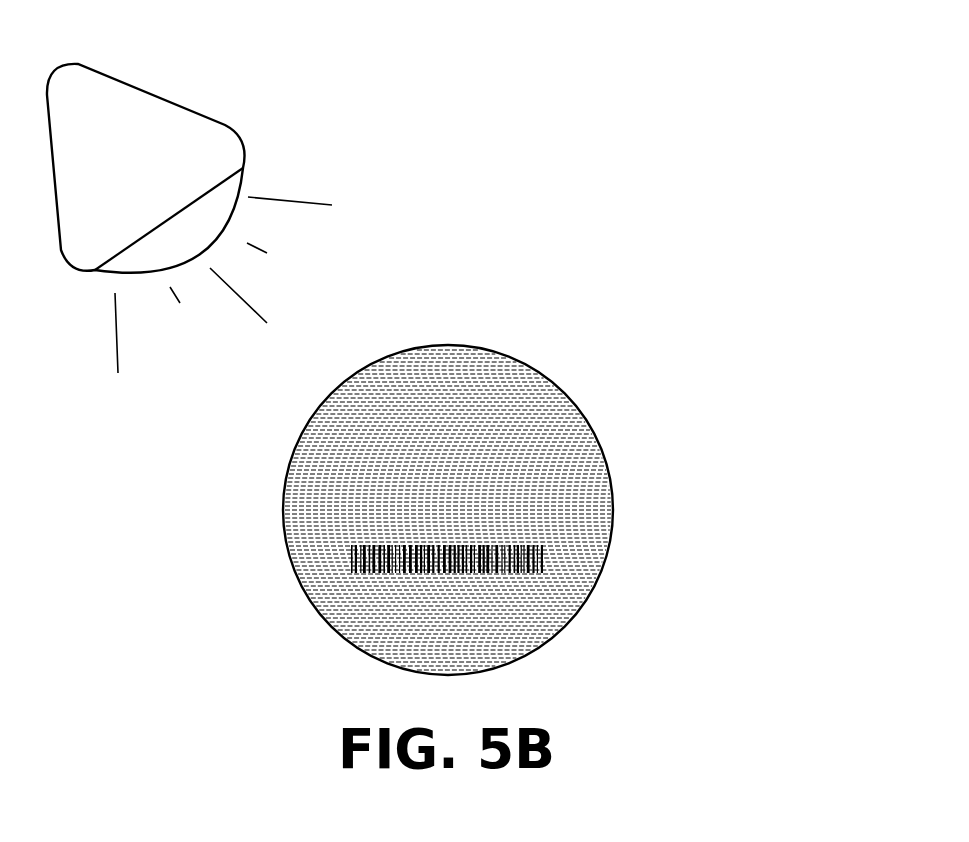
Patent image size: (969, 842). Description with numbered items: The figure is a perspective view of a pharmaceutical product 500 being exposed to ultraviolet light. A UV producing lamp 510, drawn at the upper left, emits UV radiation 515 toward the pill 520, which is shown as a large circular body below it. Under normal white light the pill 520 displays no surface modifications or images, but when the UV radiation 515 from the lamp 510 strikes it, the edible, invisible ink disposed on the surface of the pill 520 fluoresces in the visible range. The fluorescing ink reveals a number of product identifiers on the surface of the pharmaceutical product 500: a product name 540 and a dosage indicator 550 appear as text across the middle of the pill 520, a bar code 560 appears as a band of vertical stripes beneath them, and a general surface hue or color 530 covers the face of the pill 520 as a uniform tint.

The pharmaceutical product 500 is at (625, 312).
The UV producing lamp 510 is at (300, 148).
The UV radiation 515 is at (338, 212).
The pill 520 is at (607, 470).
The general surface hue or color 530 is at (572, 527).
The product name 540 is at (402, 475).
The dosage indicator 550 is at (387, 510).
The bar code 560 is at (350, 558).